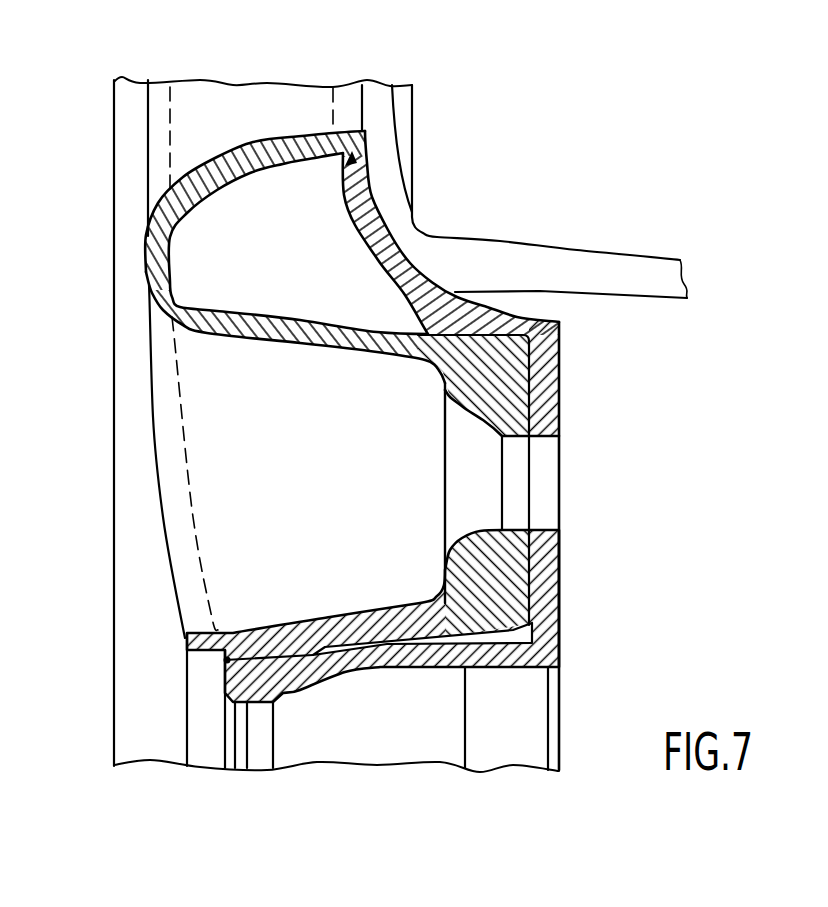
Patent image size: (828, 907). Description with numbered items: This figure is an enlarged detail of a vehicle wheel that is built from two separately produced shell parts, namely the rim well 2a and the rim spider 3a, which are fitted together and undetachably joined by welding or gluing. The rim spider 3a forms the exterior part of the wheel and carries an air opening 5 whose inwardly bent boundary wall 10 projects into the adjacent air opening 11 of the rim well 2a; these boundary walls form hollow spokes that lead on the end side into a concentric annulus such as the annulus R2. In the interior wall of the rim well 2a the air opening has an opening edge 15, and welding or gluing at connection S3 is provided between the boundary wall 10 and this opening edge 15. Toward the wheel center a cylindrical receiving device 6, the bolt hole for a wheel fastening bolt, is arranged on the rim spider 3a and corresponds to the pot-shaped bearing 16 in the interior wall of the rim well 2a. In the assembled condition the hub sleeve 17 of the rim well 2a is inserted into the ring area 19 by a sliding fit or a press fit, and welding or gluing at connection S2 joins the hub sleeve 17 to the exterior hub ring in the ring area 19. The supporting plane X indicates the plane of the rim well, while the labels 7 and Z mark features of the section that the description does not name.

The air opening 5 is at (177, 130).
The cylindrical receiving device 6 is at (223, 530).
The rim spider 3a is at (153, 272).
The boundary wall 10 is at (255, 157).
The air opening 11 is at (347, 95).
The connection S3 is at (357, 157).
The rim well 2a is at (378, 193).
The concentric annulus R2 is at (388, 232).
The opening edge 15 is at (352, 162).
The bellows lower wall 7 is at (268, 323).
The flange Z is at (540, 382).
The supporting plane X is at (602, 450).
The pot-shaped bearing 16 is at (513, 629).
The hub sleeve 17 is at (424, 653).
The connection S2 is at (227, 660).
The ring area 19 is at (265, 672).